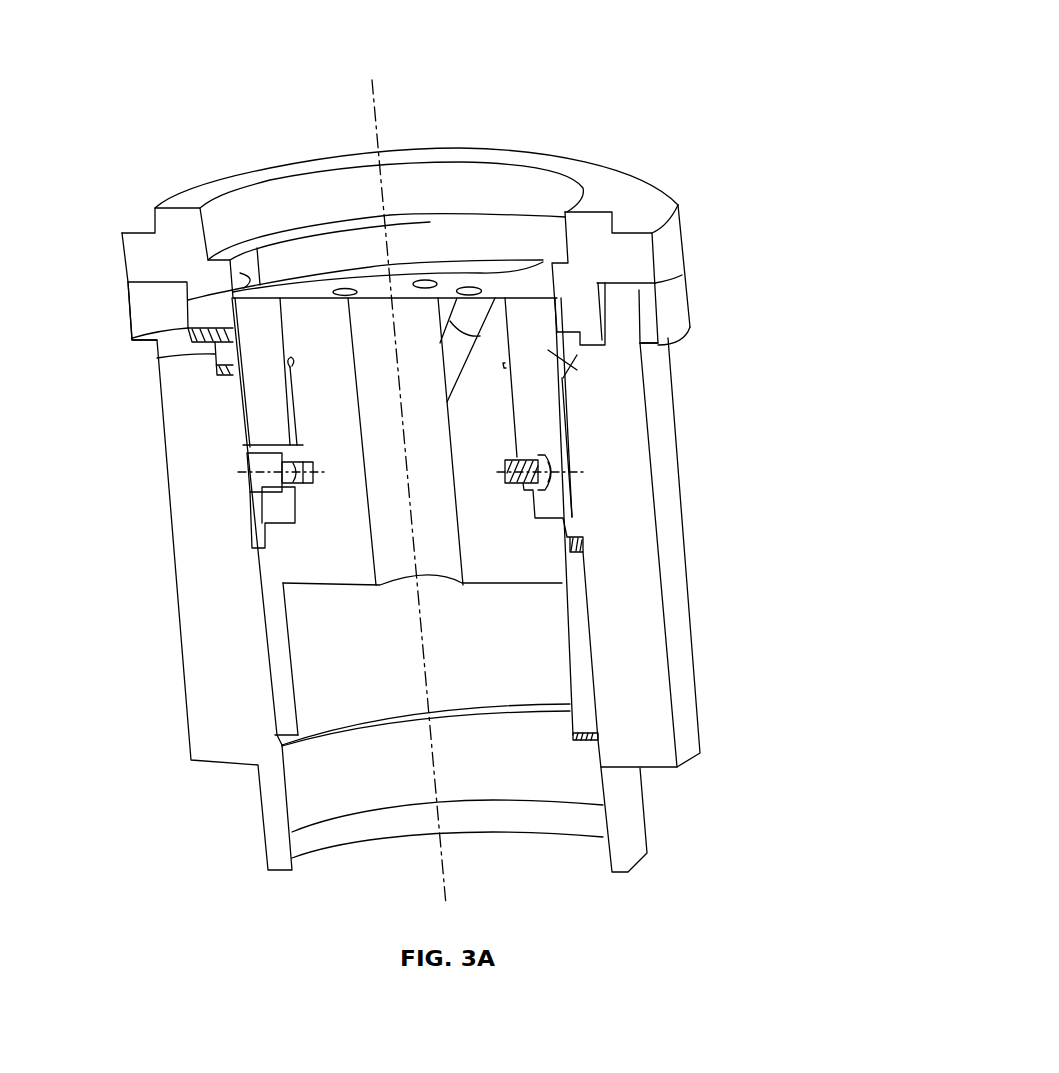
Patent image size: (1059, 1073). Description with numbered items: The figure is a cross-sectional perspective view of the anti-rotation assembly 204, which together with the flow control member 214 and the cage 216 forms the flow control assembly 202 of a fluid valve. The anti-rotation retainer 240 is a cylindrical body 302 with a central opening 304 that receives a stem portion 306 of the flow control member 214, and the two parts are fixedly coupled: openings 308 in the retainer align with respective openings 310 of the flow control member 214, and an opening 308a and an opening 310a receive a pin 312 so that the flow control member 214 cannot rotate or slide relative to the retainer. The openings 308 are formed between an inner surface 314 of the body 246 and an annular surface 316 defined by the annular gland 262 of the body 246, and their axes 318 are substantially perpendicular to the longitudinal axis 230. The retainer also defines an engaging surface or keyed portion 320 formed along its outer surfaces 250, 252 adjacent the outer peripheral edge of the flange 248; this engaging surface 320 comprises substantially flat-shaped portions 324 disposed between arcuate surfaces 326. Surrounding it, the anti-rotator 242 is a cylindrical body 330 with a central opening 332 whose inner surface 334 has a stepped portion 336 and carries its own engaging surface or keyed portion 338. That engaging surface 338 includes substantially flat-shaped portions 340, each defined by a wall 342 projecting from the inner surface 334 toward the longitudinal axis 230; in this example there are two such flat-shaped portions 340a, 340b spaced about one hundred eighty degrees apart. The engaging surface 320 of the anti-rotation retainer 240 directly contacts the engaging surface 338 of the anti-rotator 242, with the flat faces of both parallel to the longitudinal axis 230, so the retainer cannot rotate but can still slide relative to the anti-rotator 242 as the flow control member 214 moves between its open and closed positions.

The flow control assembly 202 is at (645, 41).
The anti-rotation assembly 204 is at (223, 167).
The flow control member 214 is at (285, 718).
The cage 216 is at (436, 545).
The longitudinal axis 230 is at (442, 875).
The anti-rotation retainer 240 is at (553, 510).
The anti-rotator 242 is at (657, 247).
The body 246 is at (557, 437).
The flange 248 is at (563, 378).
The outer surface 250 is at (563, 420).
The outer surface 252 is at (650, 320).
The annular gland 262 is at (291, 484).
The cylindrical body 302 is at (575, 502).
The central opening 304 is at (262, 430).
The portion 306 is at (250, 453).
The openings 308 is at (297, 484).
The opening 308a is at (545, 484).
The openings 310 is at (315, 484).
The opening 310a is at (525, 485).
The pin 312 is at (557, 460).
The inner surface 314 is at (296, 407).
The annular surface 316 is at (545, 480).
The axes 318 is at (280, 473).
The engaging surface 320 is at (130, 337).
The substantially flat-shaped portions 324 is at (157, 356).
The arcuate surfaces 326 is at (453, 260).
The cylindrical body 330 is at (138, 247).
The central opening 332 is at (270, 197).
The inner surface 334 is at (277, 257).
The stepped portion 336 is at (424, 217).
The engaging surface 338 is at (223, 252).
The substantially flat-shaped portions 340 is at (361, 235).
The substantially flat-shaped portion 340a is at (187, 297).
The substantially flat-shaped portion 340b is at (550, 263).
The wall 342 is at (245, 260).